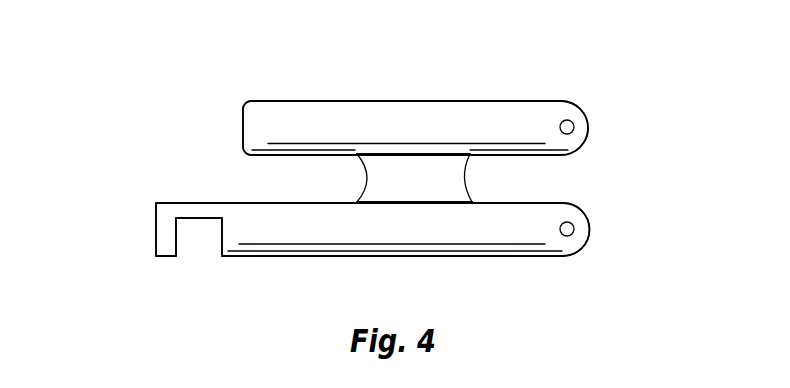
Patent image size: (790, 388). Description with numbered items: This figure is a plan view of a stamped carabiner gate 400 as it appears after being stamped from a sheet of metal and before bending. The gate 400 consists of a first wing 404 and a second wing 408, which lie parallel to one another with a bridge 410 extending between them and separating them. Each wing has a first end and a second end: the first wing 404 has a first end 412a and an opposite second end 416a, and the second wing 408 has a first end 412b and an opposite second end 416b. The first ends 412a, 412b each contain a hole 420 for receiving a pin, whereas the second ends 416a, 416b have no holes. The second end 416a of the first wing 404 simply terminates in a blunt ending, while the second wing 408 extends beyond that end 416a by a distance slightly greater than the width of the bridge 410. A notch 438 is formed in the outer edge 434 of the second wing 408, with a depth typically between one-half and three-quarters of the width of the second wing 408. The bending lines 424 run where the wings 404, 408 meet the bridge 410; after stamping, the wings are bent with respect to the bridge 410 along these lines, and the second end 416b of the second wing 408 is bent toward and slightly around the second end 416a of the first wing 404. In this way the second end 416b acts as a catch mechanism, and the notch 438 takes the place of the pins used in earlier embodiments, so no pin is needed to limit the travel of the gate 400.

The stamped carabiner gate 400 is at (392, 74).
The first wing 404 is at (432, 118).
The second wing 408 is at (447, 233).
The bridge 410 is at (452, 174).
The first end of first wing 412a is at (589, 125).
The first end of second wing 412b is at (591, 238).
The second end of first wing 416a is at (243, 133).
The second end of second wing 416b is at (156, 235).
The holes 420 is at (572, 123).
The bending lines 424 is at (364, 153).
The outer edge 434 is at (267, 257).
The notch 438 is at (196, 233).